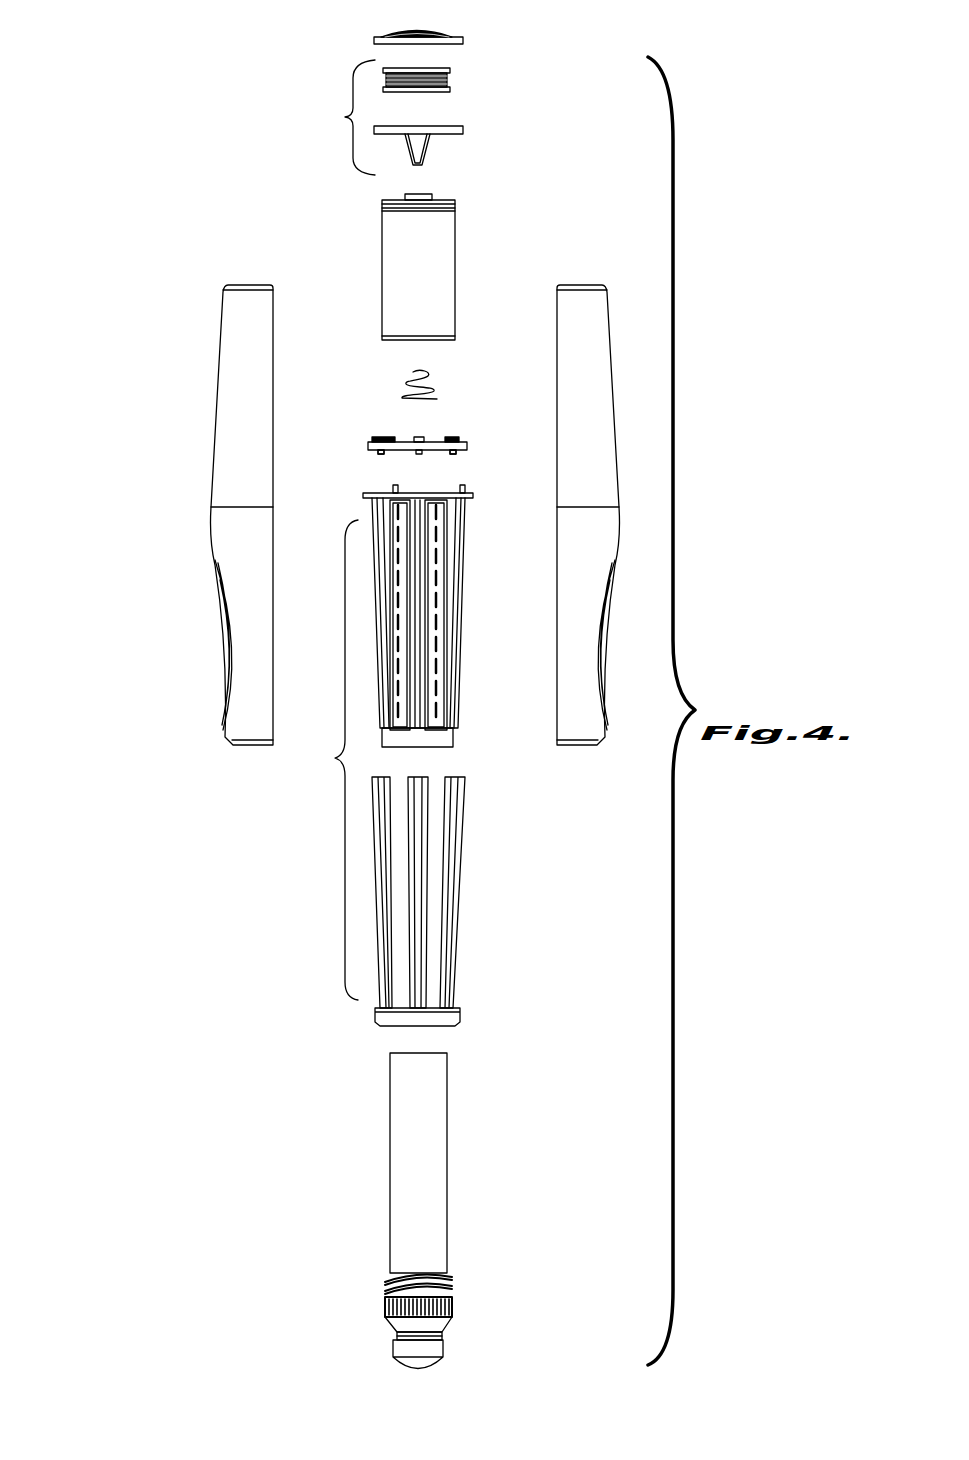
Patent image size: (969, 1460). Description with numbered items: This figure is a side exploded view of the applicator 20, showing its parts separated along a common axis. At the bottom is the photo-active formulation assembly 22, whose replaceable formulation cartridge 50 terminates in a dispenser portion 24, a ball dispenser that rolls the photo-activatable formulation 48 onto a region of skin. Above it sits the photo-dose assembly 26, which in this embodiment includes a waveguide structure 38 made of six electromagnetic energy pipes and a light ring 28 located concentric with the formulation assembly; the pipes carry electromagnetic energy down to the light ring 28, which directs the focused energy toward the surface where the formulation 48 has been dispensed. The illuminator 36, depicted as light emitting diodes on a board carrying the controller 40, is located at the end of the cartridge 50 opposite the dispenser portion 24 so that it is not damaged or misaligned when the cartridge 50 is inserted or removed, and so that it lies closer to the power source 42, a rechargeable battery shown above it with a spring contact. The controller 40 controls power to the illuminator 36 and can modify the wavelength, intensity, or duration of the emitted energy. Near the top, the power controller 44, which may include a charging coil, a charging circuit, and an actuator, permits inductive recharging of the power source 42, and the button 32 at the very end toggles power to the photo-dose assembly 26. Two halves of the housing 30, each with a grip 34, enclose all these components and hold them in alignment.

The applicator 20 is at (152, 134).
The photo-active formulation assembly 22 is at (370, 1160).
The dispenser portion 24 is at (430, 1365).
The photo-dose assembly 26 is at (333, 760).
The light ring 28 is at (455, 1016).
The housing 30 is at (228, 342).
The button 32 is at (452, 30).
The grips 34 is at (227, 627).
The illuminator 36 is at (381, 454).
The waveguide structure 38 is at (460, 790).
The controller 40 is at (385, 437).
The power source 42 is at (450, 256).
The power controller 44 is at (392, 117).
The photo-activatable formulation 48 is at (460, 582).
The replaceable formulation cartridge 50 is at (443, 1168).